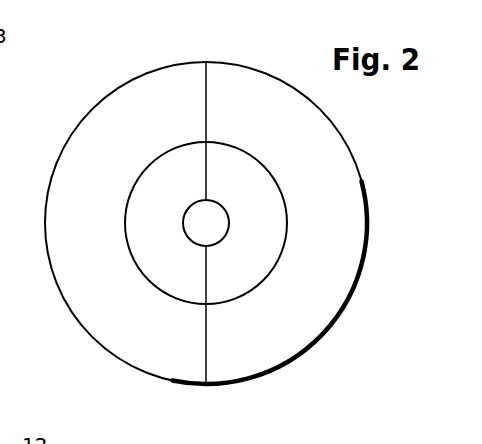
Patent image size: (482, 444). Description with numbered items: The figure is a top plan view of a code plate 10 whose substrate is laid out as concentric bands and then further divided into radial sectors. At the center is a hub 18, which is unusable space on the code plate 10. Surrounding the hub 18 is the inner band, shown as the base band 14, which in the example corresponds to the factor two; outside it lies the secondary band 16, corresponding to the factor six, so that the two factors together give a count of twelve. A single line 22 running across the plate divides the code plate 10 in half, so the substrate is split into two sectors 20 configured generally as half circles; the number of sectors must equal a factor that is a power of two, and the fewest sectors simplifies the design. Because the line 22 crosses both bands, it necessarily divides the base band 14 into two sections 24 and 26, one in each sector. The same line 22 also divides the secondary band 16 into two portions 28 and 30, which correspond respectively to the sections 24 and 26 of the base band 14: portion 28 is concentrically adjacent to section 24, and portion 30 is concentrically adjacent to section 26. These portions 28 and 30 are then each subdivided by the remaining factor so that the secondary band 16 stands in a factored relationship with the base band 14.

The code plate 10 is at (393, 212).
The base band 14 is at (150, 260).
The secondary band 16 is at (125, 340).
The hub 18 is at (213, 222).
The sectors 20 is at (182, 97).
The line 22 is at (203, 327).
The section of base band 24 is at (160, 195).
The section of base band 26 is at (243, 180).
The portion of secondary band 28 is at (103, 114).
The portion of secondary band 30 is at (338, 175).